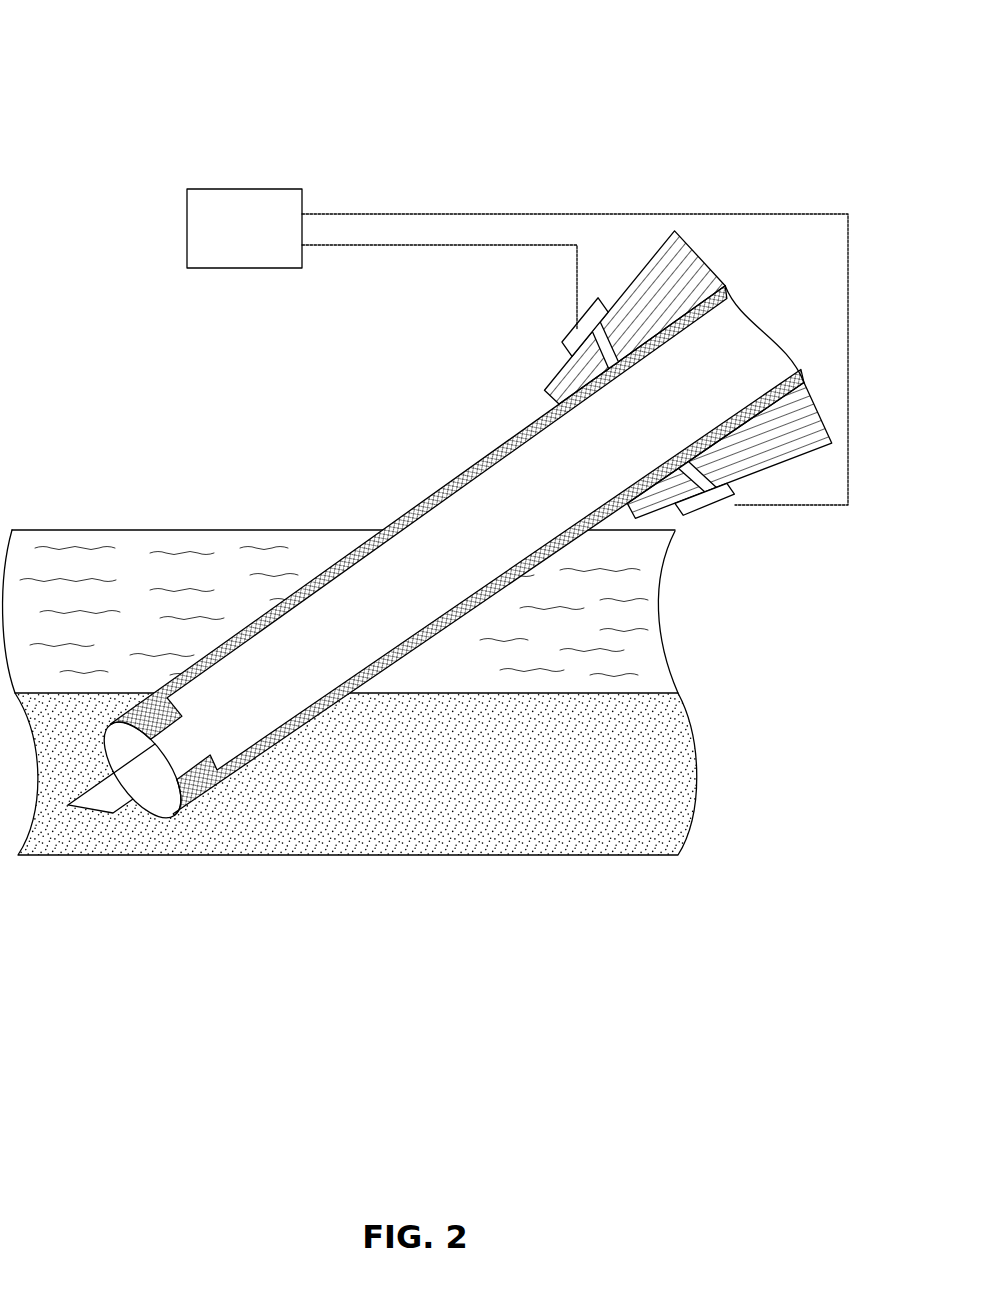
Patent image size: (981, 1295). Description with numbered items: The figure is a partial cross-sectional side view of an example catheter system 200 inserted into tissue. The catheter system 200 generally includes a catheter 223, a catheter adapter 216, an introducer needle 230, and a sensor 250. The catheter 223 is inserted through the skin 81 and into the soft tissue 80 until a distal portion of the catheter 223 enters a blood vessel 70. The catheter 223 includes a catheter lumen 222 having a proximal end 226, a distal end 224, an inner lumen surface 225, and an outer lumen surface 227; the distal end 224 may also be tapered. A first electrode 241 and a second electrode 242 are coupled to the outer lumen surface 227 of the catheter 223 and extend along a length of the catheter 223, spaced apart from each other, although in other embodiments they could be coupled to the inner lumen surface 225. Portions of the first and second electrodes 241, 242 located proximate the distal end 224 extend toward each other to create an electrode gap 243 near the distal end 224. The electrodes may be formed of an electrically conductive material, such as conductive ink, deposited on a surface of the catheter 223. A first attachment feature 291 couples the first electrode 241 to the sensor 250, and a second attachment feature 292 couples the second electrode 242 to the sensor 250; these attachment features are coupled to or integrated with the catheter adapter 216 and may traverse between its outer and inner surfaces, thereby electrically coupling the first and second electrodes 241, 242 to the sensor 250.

The catheter system 200 is at (110, 50).
The catheter adapter 216 is at (648, 282).
The proximal end 226 is at (727, 258).
The sensor 250 is at (259, 240).
The first attachment feature 291 is at (568, 340).
The second attachment feature 292 is at (690, 512).
The catheter 223 is at (307, 374).
The catheter lumen 222 is at (532, 467).
The outer lumen surface 227 is at (505, 517).
The first electrode 241 is at (158, 703).
The second electrode 242 is at (212, 788).
The electrode gap 243 is at (177, 742).
The inner lumen surface 225 is at (160, 803).
The introducer needle 230 is at (95, 805).
The distal end 224 is at (177, 874).
The skin 81 is at (270, 530).
The soft tissue 80 is at (648, 603).
The blood vessel 70 is at (683, 762).